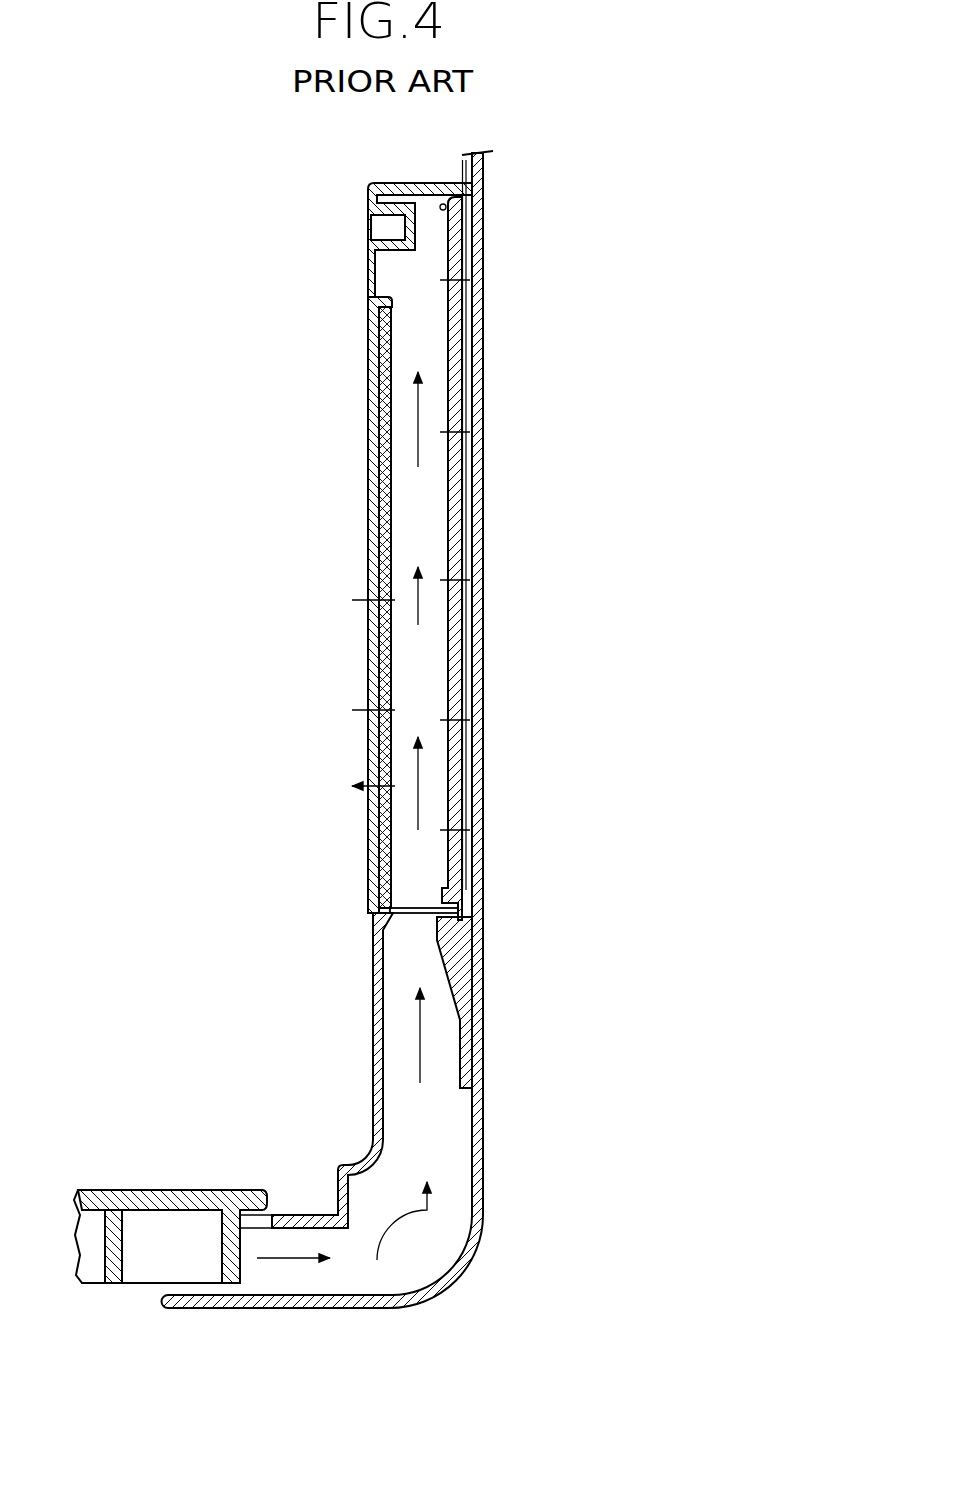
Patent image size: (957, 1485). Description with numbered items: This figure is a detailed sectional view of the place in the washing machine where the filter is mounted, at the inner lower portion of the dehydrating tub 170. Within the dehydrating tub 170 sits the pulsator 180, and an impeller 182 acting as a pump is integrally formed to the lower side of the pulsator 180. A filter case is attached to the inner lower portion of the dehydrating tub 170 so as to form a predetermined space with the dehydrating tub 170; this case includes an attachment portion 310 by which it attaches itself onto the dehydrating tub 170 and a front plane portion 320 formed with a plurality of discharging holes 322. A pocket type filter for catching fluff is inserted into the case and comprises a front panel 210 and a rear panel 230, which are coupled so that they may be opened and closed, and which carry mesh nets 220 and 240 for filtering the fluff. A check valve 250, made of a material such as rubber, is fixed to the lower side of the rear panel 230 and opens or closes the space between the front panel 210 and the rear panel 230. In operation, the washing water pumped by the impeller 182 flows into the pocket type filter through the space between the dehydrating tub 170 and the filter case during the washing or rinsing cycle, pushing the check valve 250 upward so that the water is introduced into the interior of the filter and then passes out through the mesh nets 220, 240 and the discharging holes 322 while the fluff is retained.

The dehydrating tub 170 is at (483, 782).
The pulsator 180 is at (183, 1192).
The impeller 182 is at (132, 1253).
The front panel 210 is at (366, 280).
The mesh net 220 is at (368, 430).
The rear panel 230 is at (463, 218).
The mesh net 240 is at (456, 392).
The check valve 250 is at (412, 908).
The attachment portion 310 is at (373, 1043).
The front plane portion 320 is at (370, 833).
The discharging holes 322 is at (372, 530).